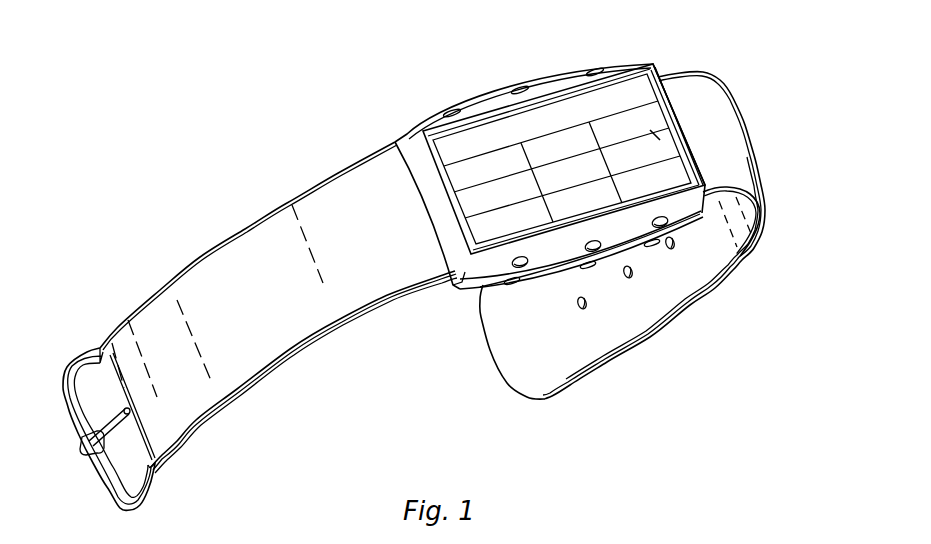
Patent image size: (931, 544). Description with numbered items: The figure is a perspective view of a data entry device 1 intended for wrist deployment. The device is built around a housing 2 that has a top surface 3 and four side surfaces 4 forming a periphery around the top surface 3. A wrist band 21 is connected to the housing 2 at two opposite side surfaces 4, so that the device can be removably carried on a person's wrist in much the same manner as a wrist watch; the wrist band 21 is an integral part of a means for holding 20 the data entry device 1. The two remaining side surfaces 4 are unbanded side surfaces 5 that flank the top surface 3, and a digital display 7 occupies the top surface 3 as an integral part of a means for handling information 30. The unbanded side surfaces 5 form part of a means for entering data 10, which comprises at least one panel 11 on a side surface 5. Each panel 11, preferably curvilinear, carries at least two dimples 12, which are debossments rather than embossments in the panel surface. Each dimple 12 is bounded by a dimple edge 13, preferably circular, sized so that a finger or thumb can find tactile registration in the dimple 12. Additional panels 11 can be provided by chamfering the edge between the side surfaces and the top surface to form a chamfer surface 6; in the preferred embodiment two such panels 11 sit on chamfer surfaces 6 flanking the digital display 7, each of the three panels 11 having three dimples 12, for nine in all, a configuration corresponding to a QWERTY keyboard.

The data entry device 1 is at (296, 167).
The housing 2 is at (645, 60).
The top surface 3 is at (566, 90).
The side surfaces 4 is at (394, 142).
The unbanded side surfaces 5 is at (483, 286).
The chamfer surface 6 is at (632, 240).
The digital display 7 is at (647, 97).
The means for entering data 10 is at (598, 266).
The panel 11 is at (678, 229).
The dimples 12 is at (445, 108).
The dimple edge 13 is at (450, 273).
The means for holding 20 is at (118, 293).
The wrist band 21 is at (203, 270).
The means for handling information 30 is at (662, 138).